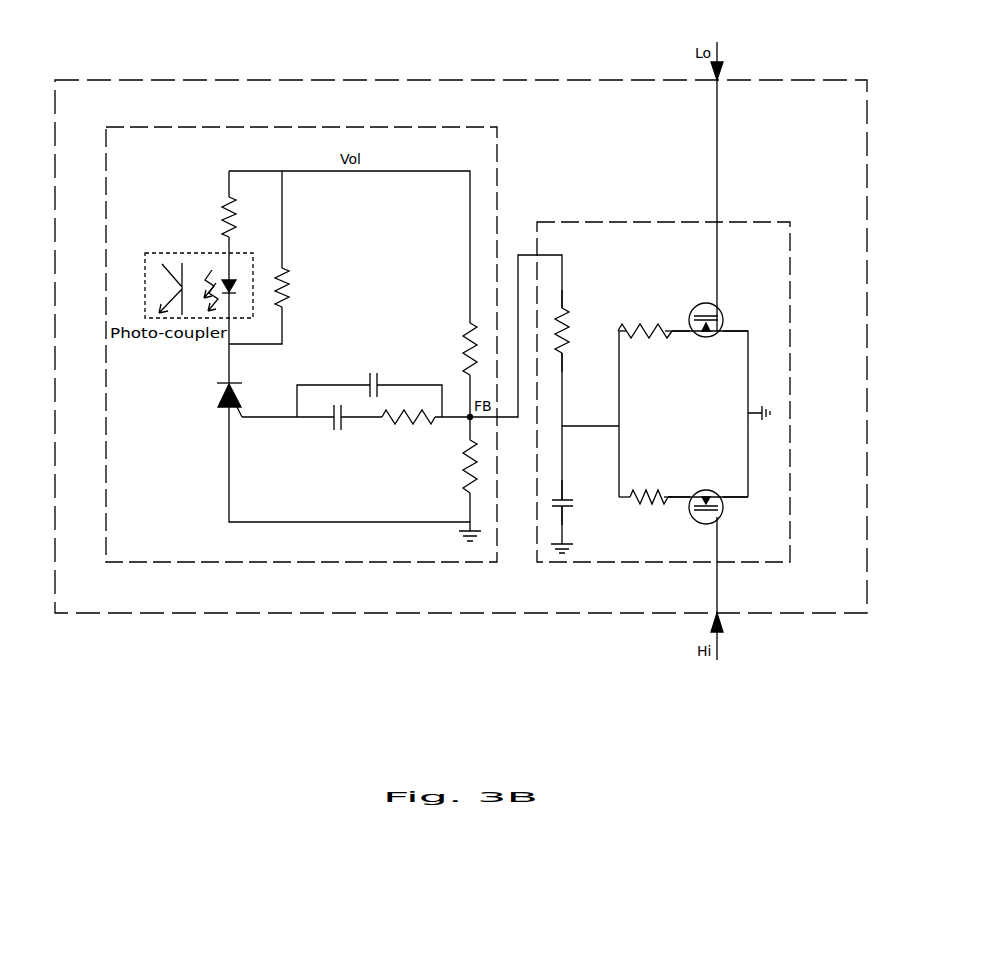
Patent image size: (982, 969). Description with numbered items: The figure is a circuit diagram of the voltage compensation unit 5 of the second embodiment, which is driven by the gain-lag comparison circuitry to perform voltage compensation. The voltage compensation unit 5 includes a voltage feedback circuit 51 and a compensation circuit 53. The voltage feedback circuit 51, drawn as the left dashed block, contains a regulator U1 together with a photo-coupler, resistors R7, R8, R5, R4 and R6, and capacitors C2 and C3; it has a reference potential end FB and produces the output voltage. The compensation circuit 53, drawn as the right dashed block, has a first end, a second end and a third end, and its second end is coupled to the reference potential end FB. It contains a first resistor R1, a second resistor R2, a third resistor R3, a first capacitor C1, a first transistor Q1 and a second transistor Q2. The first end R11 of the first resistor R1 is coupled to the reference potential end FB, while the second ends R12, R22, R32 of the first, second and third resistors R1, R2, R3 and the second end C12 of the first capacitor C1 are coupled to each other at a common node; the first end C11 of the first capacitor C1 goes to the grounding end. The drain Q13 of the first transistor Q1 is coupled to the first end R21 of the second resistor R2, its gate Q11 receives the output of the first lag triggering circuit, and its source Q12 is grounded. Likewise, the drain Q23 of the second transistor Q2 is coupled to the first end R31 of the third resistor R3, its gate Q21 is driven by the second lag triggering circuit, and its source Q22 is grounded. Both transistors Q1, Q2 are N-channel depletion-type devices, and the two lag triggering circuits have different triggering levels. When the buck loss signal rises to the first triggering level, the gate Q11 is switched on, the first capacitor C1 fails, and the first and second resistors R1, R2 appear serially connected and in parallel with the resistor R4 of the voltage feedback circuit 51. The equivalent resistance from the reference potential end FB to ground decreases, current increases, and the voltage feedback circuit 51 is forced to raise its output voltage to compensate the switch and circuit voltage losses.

The voltage compensation unit 5 is at (460, 80).
The voltage feedback circuit 51 is at (270, 127).
The compensation circuit 53 is at (790, 258).
The resistor R7 is at (216, 217).
The resistor R8 is at (294, 287).
The resistor R5 is at (455, 349).
The resistor R4 is at (455, 466).
The resistor R6 is at (408, 430).
The capacitor C2 is at (362, 380).
The capacitor C3 is at (337, 428).
The regulator U1 is at (213, 400).
The first resistor R1 is at (575, 330).
The first end of the first resistor R11 is at (563, 305).
The second end of the first resistor R12 is at (563, 356).
The second resistor R2 is at (645, 342).
The first end of the second resistor R21 is at (672, 334).
The second end of the second resistor R22 is at (630, 331).
The third resistor R3 is at (649, 508).
The first end of the third resistor R31 is at (670, 497).
The second end of the third resistor R32 is at (630, 497).
The first capacitor C1 is at (574, 501).
The first end of the first capacitor C11 is at (562, 507).
The second end of the first capacitor C12 is at (562, 500).
The first transistor Q1 is at (695, 306).
The gate of the first transistor Q11 is at (718, 302).
The source of the first transistor Q12 is at (722, 331).
The drain of the first transistor Q13 is at (695, 335).
The second transistor Q2 is at (700, 522).
The gate of the second transistor Q21 is at (717, 523).
The source of the second transistor Q22 is at (722, 497).
The drain of the second transistor Q23 is at (692, 497).